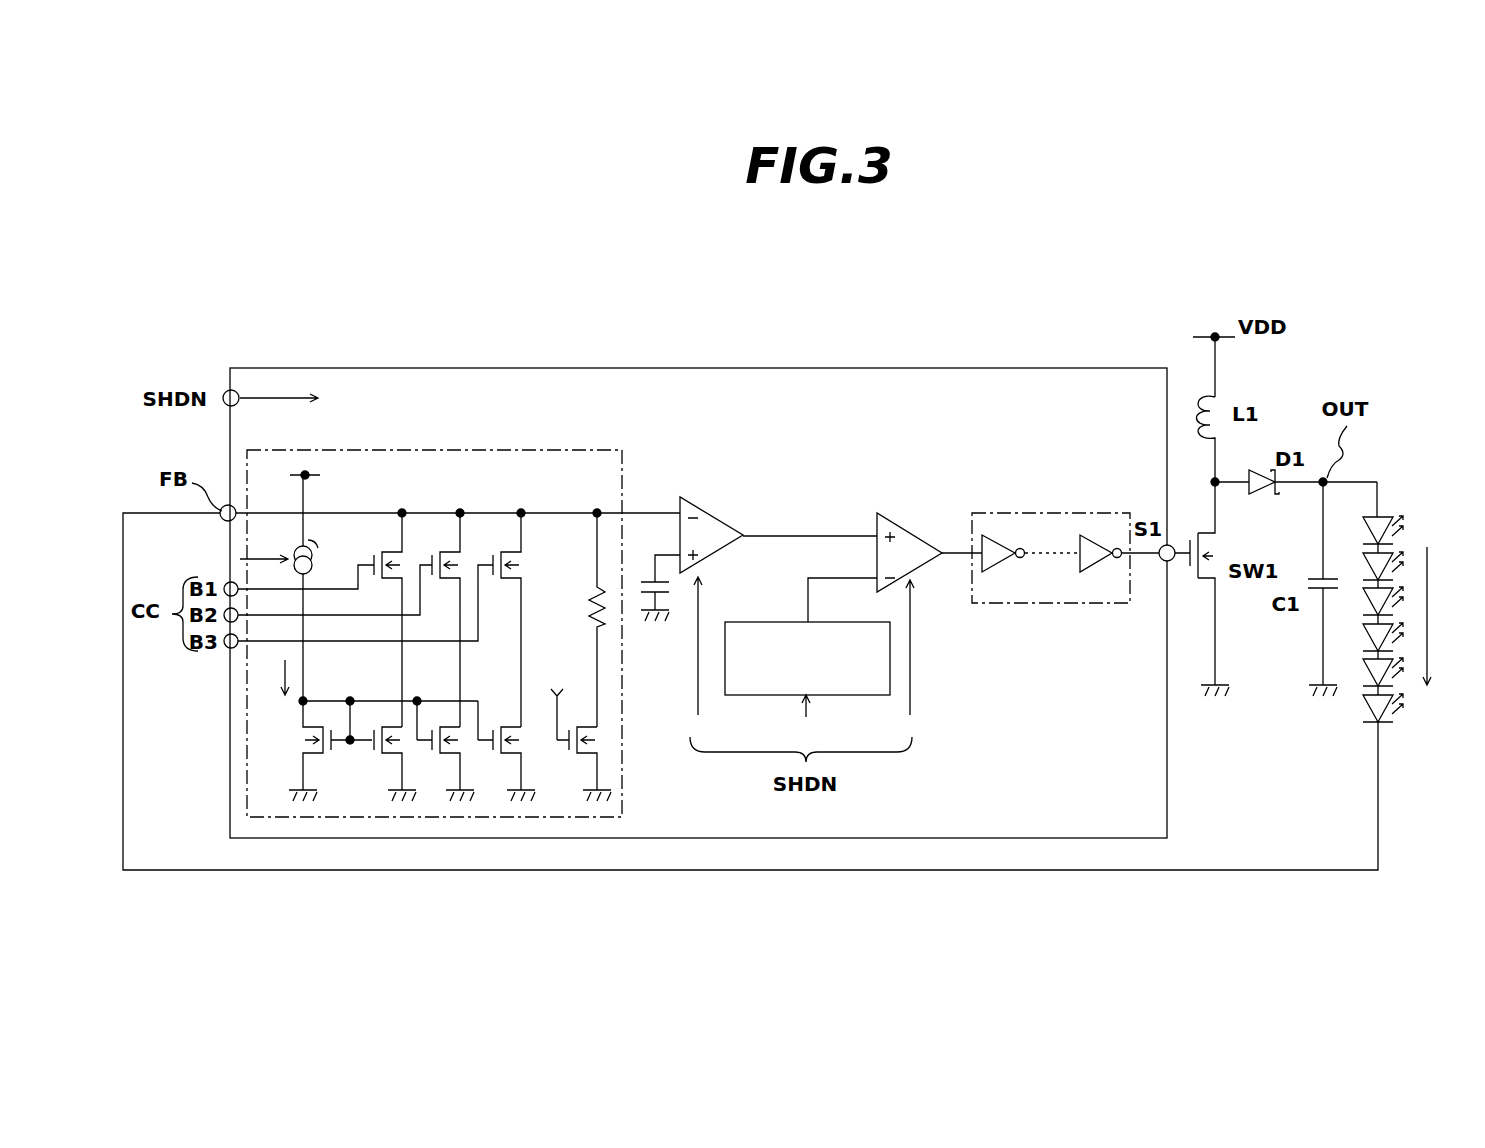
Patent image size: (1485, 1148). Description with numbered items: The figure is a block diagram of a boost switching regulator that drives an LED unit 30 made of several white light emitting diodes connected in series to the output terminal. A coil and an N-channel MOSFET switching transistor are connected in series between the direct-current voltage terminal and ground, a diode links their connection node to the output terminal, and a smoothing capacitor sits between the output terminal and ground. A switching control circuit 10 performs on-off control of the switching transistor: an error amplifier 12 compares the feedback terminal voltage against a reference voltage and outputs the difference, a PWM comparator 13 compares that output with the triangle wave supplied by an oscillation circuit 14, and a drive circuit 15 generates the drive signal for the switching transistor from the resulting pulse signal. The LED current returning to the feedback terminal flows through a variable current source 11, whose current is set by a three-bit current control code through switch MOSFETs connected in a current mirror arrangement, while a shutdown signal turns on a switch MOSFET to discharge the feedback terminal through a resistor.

The switching control circuit 10 is at (720, 368).
The variable current source 11 is at (517, 450).
The error amplifier 12 is at (716, 510).
The PWM comparator 13 is at (905, 530).
The oscillation circuit 14 is at (890, 655).
The drive circuit 15 is at (1045, 603).
The LED unit 30 is at (1387, 505).